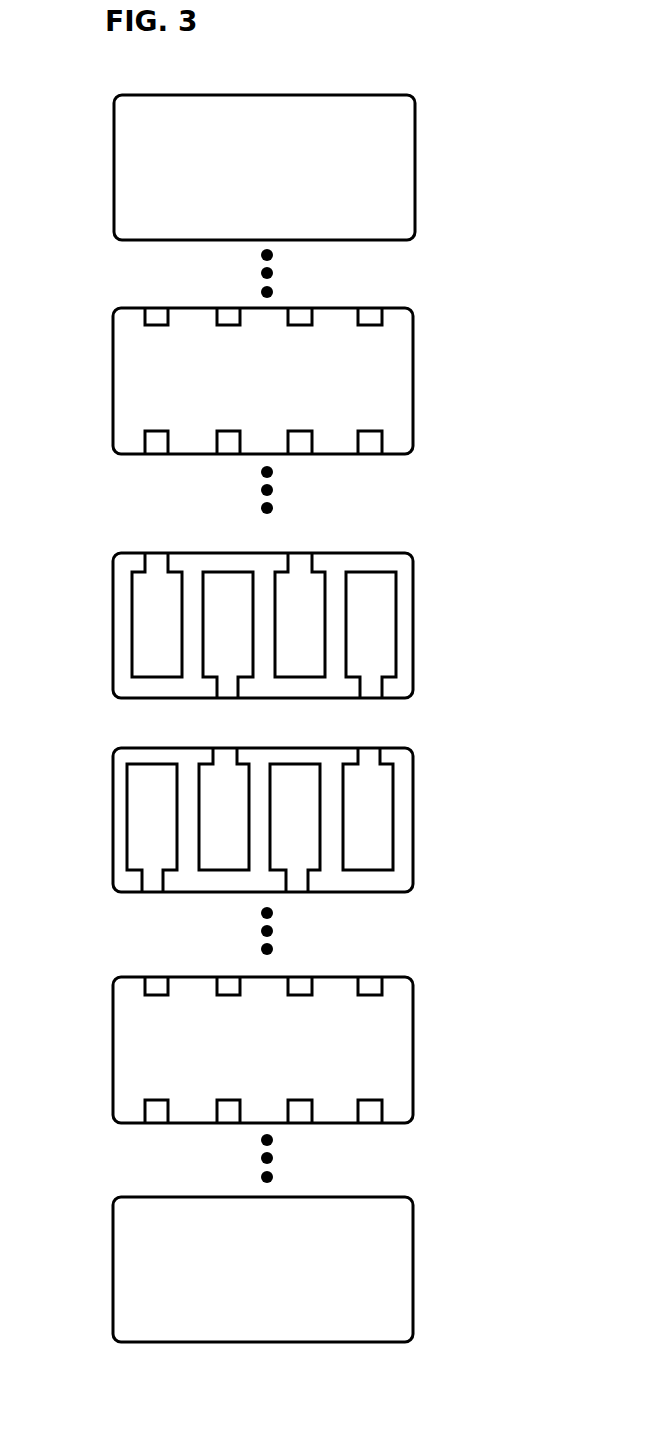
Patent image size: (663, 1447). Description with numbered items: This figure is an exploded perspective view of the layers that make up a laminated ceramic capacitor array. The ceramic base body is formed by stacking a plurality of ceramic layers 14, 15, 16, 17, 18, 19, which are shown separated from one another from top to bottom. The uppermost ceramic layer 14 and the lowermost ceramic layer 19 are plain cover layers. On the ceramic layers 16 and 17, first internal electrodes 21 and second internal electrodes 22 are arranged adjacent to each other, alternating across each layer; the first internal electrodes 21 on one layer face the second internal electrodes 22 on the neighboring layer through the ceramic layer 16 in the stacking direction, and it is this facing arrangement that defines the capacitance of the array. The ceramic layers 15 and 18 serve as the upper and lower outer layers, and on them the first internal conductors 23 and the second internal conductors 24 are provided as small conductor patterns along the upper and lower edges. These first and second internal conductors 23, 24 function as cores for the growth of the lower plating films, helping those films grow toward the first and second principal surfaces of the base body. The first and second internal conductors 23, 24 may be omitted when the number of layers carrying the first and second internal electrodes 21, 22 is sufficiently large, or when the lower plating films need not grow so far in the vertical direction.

The ceramic layer 14 is at (398, 147).
The ceramic layer 15 is at (398, 370).
The ceramic layer 16 is at (415, 641).
The ceramic layer 17 is at (415, 800).
The ceramic layer 18 is at (413, 1052).
The ceramic layer 19 is at (413, 1266).
The first internal electrode 21 is at (152, 628).
The second internal electrode 22 is at (208, 660).
The first internal conductor 23 is at (158, 311).
The second internal conductor 24 is at (156, 446).